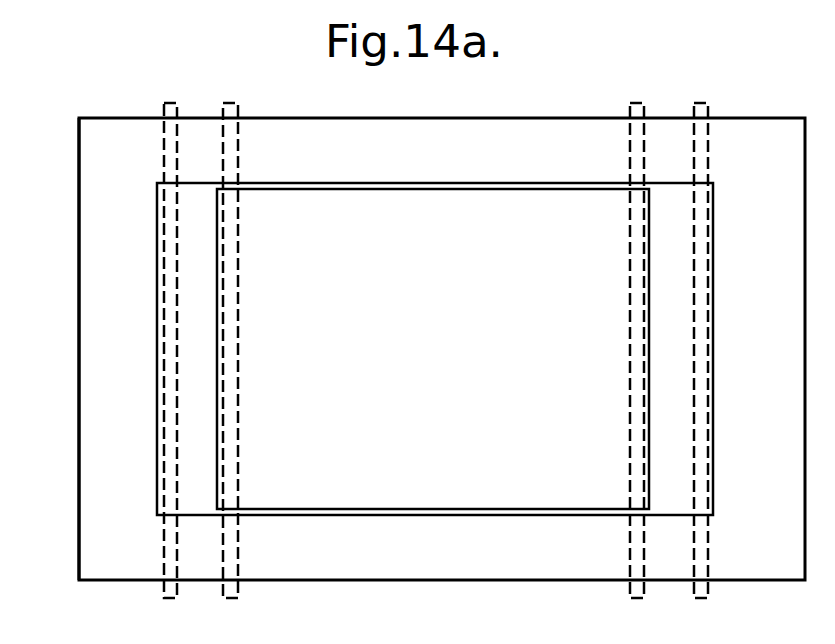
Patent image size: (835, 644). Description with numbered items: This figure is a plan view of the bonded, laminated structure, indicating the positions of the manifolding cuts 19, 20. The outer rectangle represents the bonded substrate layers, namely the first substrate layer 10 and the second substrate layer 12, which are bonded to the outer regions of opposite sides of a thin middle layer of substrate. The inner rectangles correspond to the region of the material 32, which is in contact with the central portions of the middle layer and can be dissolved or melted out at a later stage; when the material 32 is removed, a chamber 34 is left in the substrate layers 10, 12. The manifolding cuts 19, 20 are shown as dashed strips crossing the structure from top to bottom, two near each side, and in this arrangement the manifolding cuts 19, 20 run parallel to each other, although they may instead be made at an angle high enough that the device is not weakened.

The first substrate layer 10 is at (117, 128).
The second substrate layer 12 is at (79, 208).
The manifolding cut 19 is at (168, 103).
The manifolding cut 20 is at (228, 103).
The material 32 is at (558, 473).
The chamber 34 is at (670, 473).